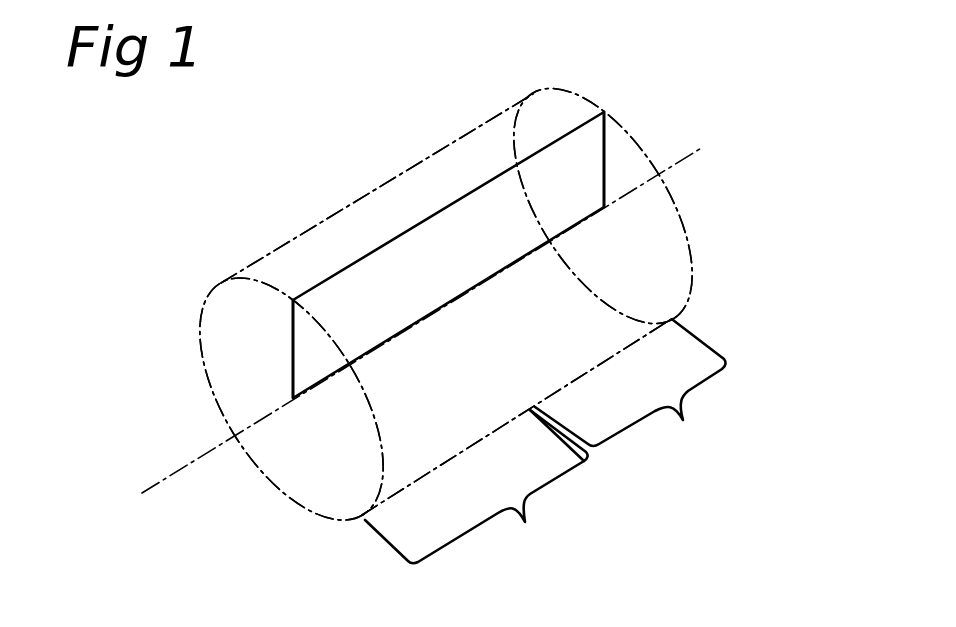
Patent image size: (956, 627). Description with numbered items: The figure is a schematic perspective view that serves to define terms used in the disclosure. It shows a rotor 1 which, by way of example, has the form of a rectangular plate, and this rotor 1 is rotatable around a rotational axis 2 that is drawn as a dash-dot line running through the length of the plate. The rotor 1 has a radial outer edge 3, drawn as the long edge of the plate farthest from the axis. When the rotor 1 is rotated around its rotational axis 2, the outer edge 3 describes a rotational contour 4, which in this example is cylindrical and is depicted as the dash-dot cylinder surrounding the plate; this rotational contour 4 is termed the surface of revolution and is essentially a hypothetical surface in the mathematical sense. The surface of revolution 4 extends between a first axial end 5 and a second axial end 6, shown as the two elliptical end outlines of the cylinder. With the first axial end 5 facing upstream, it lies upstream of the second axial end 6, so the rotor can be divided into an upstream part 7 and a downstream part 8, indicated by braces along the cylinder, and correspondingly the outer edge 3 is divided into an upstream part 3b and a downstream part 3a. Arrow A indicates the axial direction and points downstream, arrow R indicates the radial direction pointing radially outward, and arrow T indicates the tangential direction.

The rotor 1 is at (575, 160).
The rotational axis 2 is at (658, 174).
The radial outer edge 3 is at (402, 229).
The downstream part of the outer edge 3a is at (572, 126).
The upstream part of the outer edge 3b is at (310, 291).
The rotational contour 4 is at (500, 350).
The first axial end 5 is at (333, 519).
The second axial end 6 is at (693, 272).
The upstream part 7 is at (476, 486).
The downstream part 8 is at (630, 383).
The arrow A is at (703, 147).
The arrow R is at (293, 400).
The arrow T is at (292, 437).